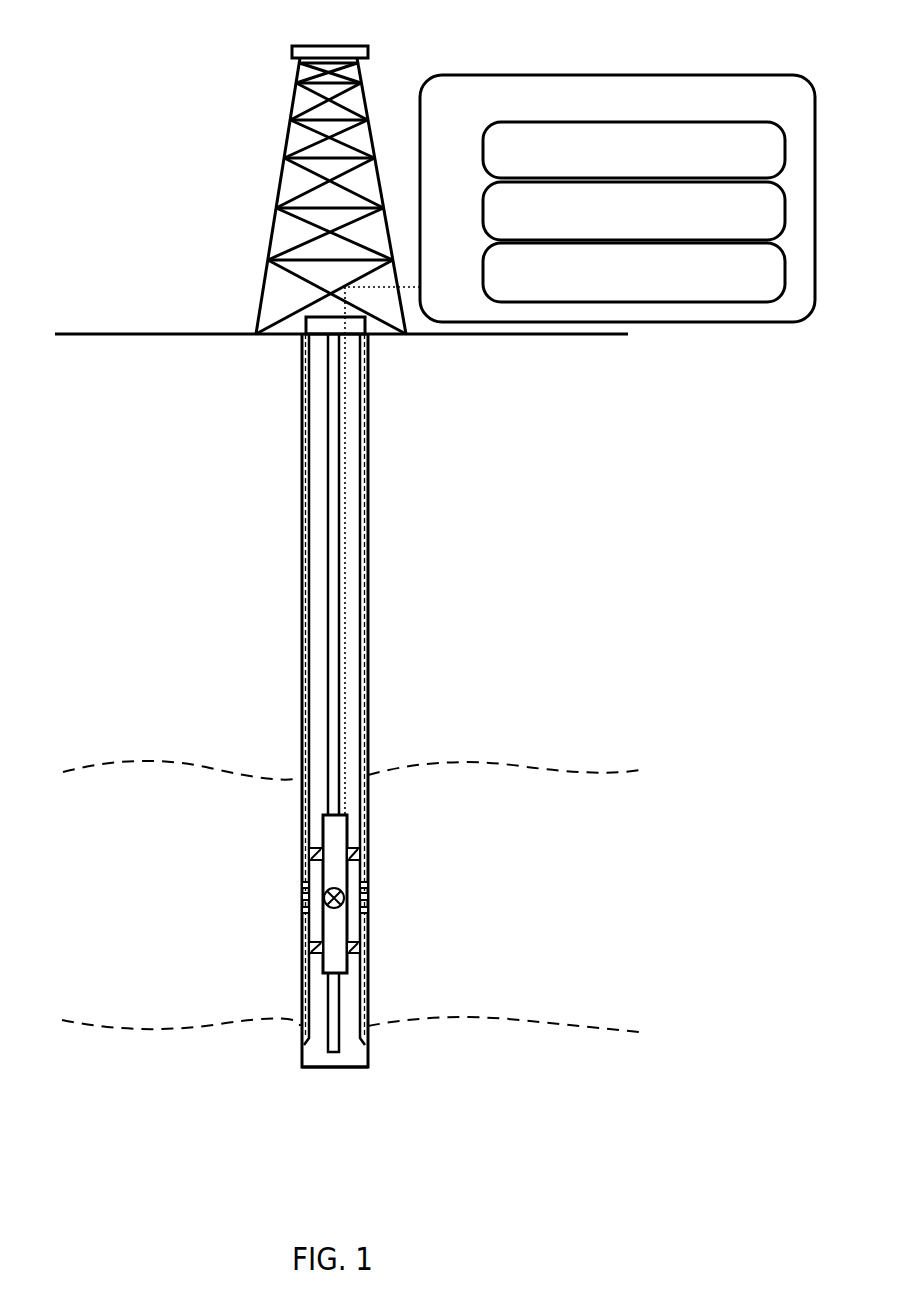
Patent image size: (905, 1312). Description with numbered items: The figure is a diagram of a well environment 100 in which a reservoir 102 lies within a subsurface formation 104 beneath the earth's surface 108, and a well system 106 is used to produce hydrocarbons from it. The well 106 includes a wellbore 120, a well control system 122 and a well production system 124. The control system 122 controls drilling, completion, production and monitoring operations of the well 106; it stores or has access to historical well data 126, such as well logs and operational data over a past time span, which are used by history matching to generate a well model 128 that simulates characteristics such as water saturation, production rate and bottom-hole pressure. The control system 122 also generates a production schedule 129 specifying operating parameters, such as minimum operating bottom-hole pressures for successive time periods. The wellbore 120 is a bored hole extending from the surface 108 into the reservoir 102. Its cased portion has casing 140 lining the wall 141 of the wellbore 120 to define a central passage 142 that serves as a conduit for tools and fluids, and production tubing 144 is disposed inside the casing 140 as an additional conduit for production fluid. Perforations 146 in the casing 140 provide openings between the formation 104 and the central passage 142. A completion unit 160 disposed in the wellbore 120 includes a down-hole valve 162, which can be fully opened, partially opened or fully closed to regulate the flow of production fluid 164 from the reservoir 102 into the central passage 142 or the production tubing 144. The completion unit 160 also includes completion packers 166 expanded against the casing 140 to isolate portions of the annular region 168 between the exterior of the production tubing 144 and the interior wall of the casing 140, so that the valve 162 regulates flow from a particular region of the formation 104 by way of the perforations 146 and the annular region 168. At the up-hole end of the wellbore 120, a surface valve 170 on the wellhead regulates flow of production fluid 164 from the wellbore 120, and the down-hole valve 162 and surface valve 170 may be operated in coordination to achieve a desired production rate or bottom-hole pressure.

The well environment 100 is at (490, 44).
The reservoir 102 is at (592, 890).
The subsurface formation 104 is at (585, 467).
The well system 106 is at (228, 275).
The surface 108 is at (545, 340).
The wellbore 120 is at (358, 1086).
The well control system 122 is at (466, 132).
The well production system 124 is at (387, 700).
The historical well data 126 is at (653, 172).
The well model 128 is at (653, 234).
The production schedule 129 is at (653, 296).
The casing 140 is at (369, 509).
The wall of the wellbore 141 is at (372, 467).
The central passage 142 is at (354, 543).
The production tubing 144 is at (342, 583).
The perforations 146 is at (374, 882).
The completion unit 160 is at (320, 812).
The down-hole valve 162 is at (326, 885).
The production fluid 164 is at (297, 898).
The completion packers 166 is at (365, 853).
The annular region 168 is at (365, 922).
The surface valve 170 is at (298, 322).